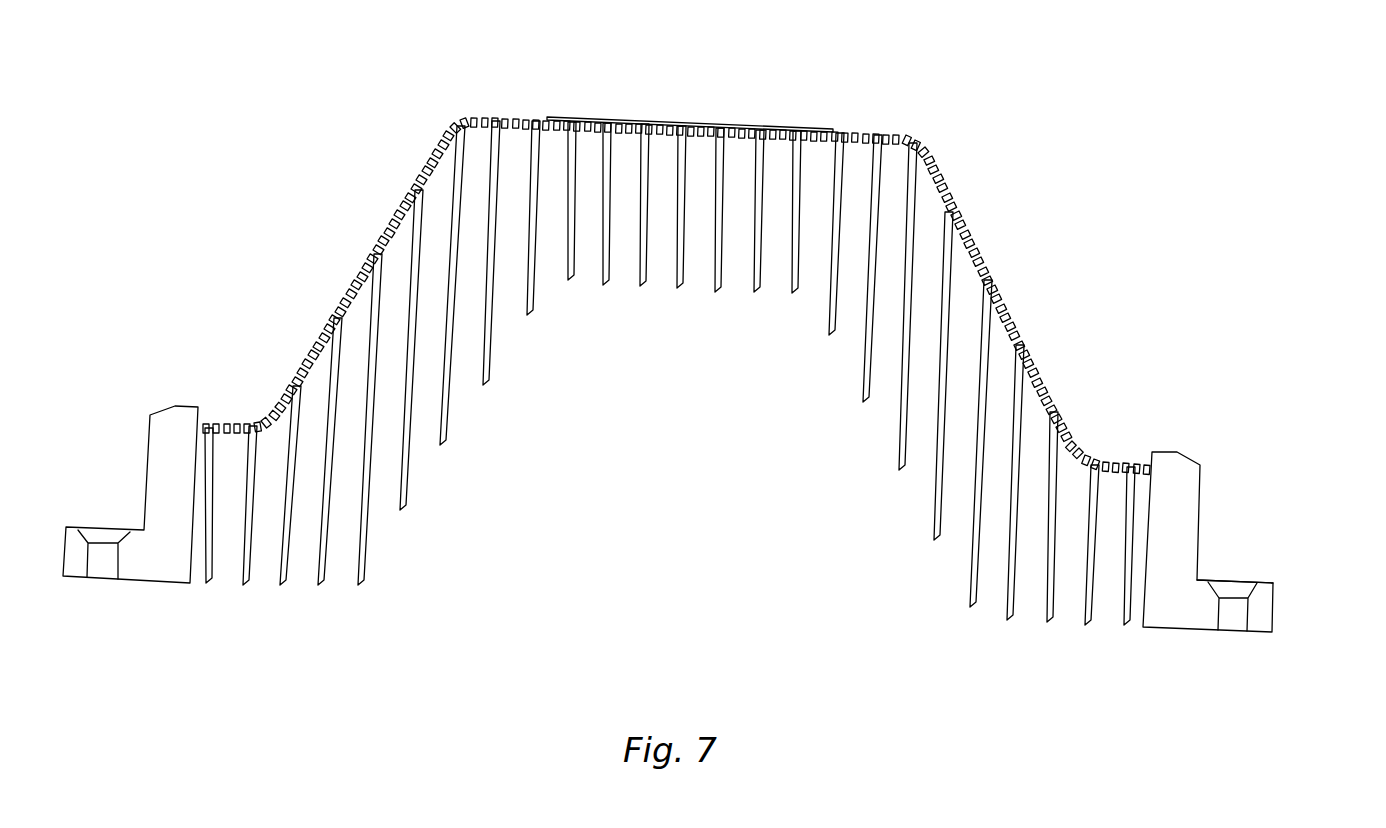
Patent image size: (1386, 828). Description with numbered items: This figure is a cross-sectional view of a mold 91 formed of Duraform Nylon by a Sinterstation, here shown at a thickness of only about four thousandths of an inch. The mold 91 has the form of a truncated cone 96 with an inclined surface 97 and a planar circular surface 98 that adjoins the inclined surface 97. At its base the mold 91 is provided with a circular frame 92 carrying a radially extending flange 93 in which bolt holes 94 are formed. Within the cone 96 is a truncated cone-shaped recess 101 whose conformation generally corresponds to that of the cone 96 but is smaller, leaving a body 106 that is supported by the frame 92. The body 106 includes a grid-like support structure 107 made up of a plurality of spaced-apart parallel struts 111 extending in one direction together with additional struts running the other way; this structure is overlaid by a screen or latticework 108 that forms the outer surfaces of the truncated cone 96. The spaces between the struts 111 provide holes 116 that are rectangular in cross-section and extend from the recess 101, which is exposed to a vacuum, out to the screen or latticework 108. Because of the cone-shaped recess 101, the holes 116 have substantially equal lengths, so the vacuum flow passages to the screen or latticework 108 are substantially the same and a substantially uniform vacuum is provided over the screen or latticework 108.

The mold 91 is at (390, 132).
The circular frame 92 is at (1190, 482).
The radially extending flange 93 is at (1207, 582).
The bolt holes 94 is at (1247, 590).
The truncated cone 96 is at (994, 270).
The inclined surface 97 is at (1015, 338).
The planar circular surface 98 is at (845, 130).
The truncated cone-shaped recess 101 is at (704, 355).
The body 106 is at (982, 622).
The grid-like support structure 107 is at (508, 348).
The screen or latticework 108 is at (963, 216).
The spaced-apart parallel struts 111 is at (606, 286).
The holes 116 is at (925, 472).